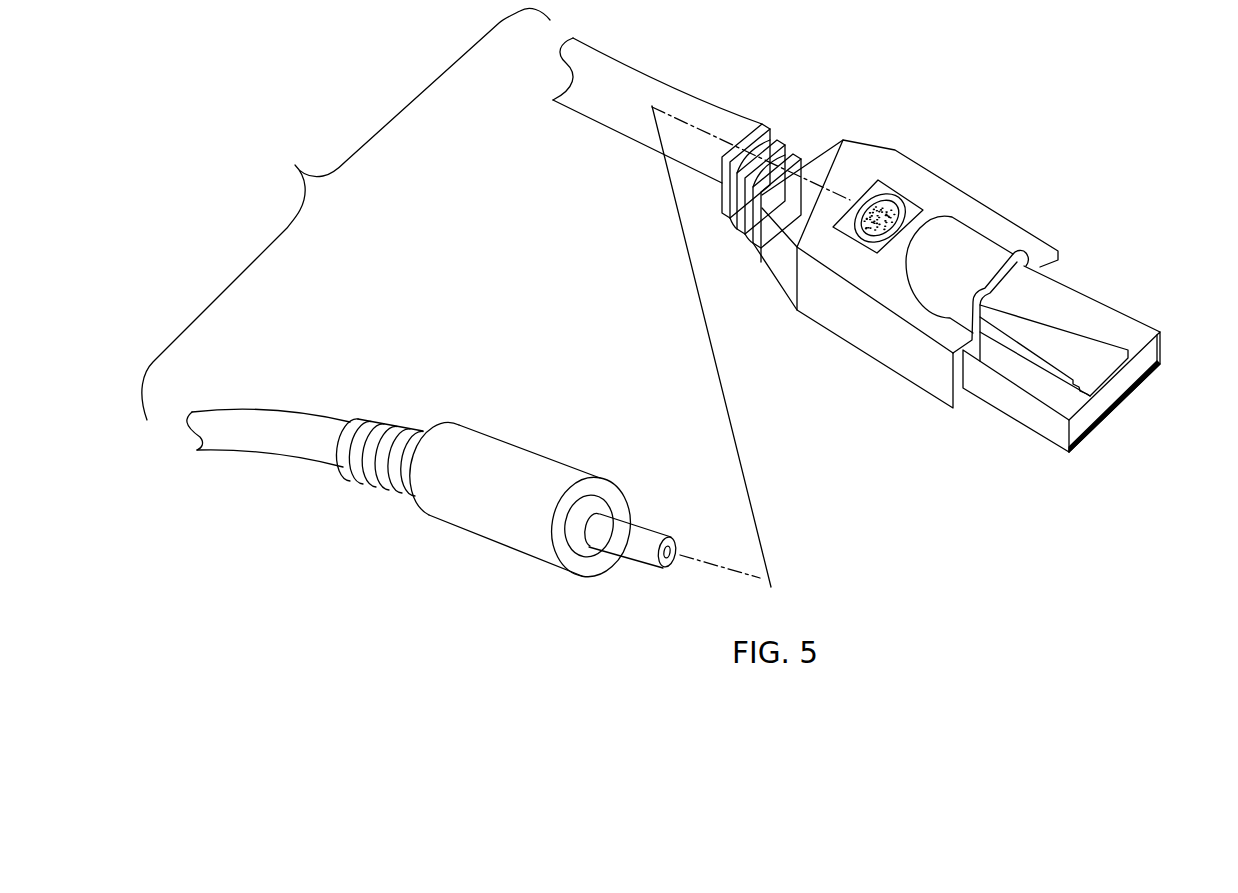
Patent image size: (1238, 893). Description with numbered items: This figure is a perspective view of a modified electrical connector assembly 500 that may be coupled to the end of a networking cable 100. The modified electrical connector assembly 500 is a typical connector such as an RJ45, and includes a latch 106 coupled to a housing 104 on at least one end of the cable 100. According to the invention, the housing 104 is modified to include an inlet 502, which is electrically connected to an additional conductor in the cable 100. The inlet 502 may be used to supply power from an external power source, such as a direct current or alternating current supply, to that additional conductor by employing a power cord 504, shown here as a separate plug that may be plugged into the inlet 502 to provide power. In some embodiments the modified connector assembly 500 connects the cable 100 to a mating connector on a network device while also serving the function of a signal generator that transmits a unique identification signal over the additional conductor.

The cable 100 is at (688, 110).
The modified electrical connector assembly 500 is at (941, 266).
The housing 104 is at (960, 185).
The inlet 502 is at (857, 229).
The latch 106 is at (1045, 428).
The power cord 504 is at (533, 451).